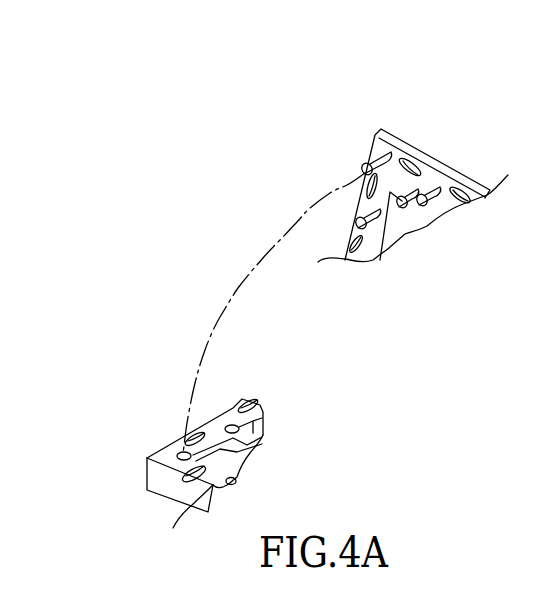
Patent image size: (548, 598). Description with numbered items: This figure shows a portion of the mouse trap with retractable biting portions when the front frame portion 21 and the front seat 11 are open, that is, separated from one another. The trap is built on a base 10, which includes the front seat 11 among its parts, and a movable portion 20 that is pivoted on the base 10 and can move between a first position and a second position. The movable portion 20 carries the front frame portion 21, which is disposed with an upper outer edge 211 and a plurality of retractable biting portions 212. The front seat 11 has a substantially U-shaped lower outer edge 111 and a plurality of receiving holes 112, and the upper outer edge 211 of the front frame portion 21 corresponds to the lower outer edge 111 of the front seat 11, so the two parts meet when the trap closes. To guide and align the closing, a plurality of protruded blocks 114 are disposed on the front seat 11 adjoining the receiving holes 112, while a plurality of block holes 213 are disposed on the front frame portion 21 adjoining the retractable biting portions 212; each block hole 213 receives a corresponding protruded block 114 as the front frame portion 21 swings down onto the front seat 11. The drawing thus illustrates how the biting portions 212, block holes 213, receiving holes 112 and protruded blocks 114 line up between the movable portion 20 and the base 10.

The base 10 is at (137, 472).
The front seat 11 is at (137, 472).
The lower outer edge 111 is at (163, 455).
The receiving holes 112 is at (230, 425).
The protruded blocks 114 is at (147, 494).
The movable portion 20 is at (377, 168).
The front frame portion 21 is at (470, 177).
The upper outer edge 211 is at (428, 180).
The retractable biting portions 212 is at (362, 168).
The block holes 213 is at (408, 164).